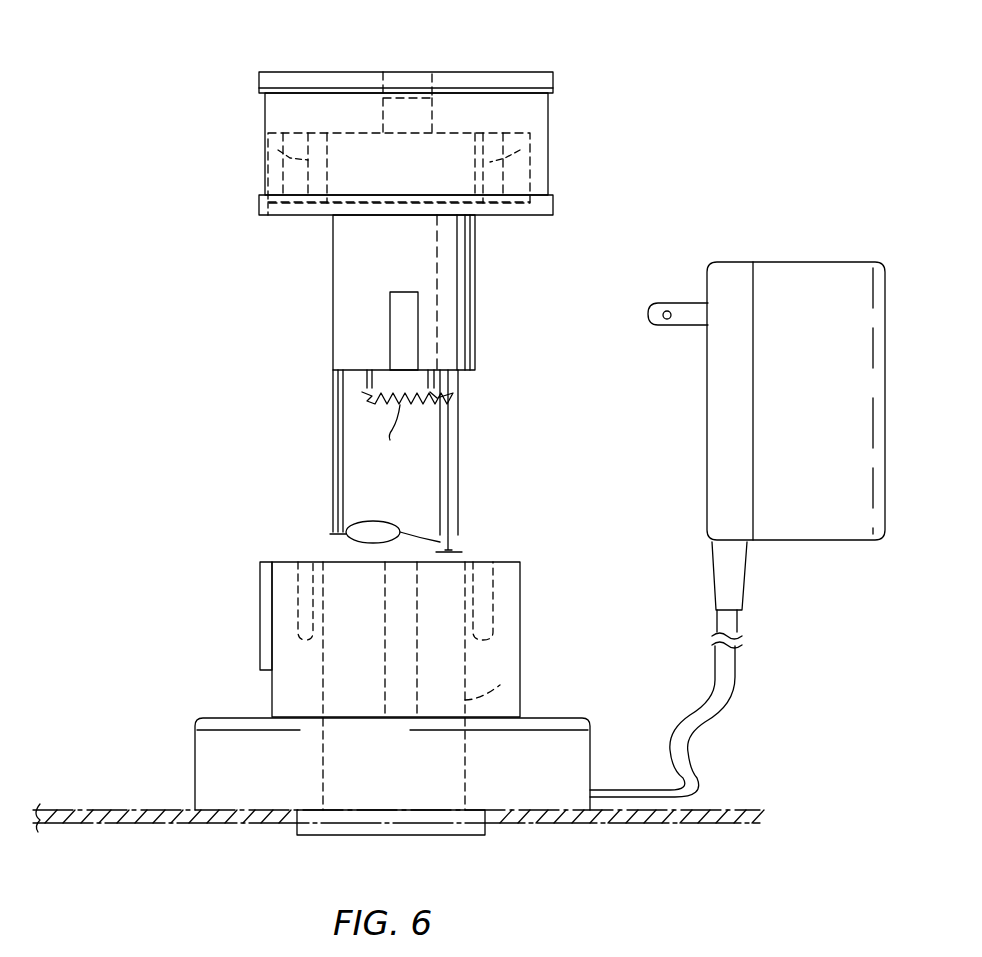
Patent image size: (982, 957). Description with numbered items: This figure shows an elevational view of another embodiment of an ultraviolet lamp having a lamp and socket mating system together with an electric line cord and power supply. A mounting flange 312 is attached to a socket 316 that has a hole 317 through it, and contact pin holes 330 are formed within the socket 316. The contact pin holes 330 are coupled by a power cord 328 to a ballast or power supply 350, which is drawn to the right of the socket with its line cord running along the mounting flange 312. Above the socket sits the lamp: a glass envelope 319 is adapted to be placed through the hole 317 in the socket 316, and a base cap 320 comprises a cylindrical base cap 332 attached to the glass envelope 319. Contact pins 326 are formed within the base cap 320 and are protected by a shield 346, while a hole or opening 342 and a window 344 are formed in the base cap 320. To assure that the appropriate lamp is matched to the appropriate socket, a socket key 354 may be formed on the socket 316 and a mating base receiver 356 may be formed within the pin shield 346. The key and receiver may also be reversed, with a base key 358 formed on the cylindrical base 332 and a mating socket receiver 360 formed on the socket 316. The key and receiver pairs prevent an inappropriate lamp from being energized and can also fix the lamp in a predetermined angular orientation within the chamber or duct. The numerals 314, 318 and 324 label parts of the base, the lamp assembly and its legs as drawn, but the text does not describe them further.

The mounting flange 312 is at (165, 823).
The base 314 is at (215, 720).
The socket 316 is at (520, 608).
The hole 317 is at (520, 672).
The bulb assembly 318 is at (382, 461).
The glass envelope 319 is at (460, 470).
The base cap 320 is at (428, 128).
The legs 324 is at (333, 468).
The contact pins 326 is at (268, 138).
The power cord 328 is at (735, 673).
The contact pin holes 330 is at (470, 580).
The cylindrical base cap 332 is at (455, 300).
The hole or opening 342 is at (434, 110).
The window 344 is at (405, 72).
The shield 346 is at (262, 183).
The ballast or power supply 350 is at (792, 262).
The socket key 354 is at (260, 586).
The mating base receiver 356 is at (268, 210).
The base key 358 is at (410, 340).
The mating socket receiver 360 is at (385, 685).